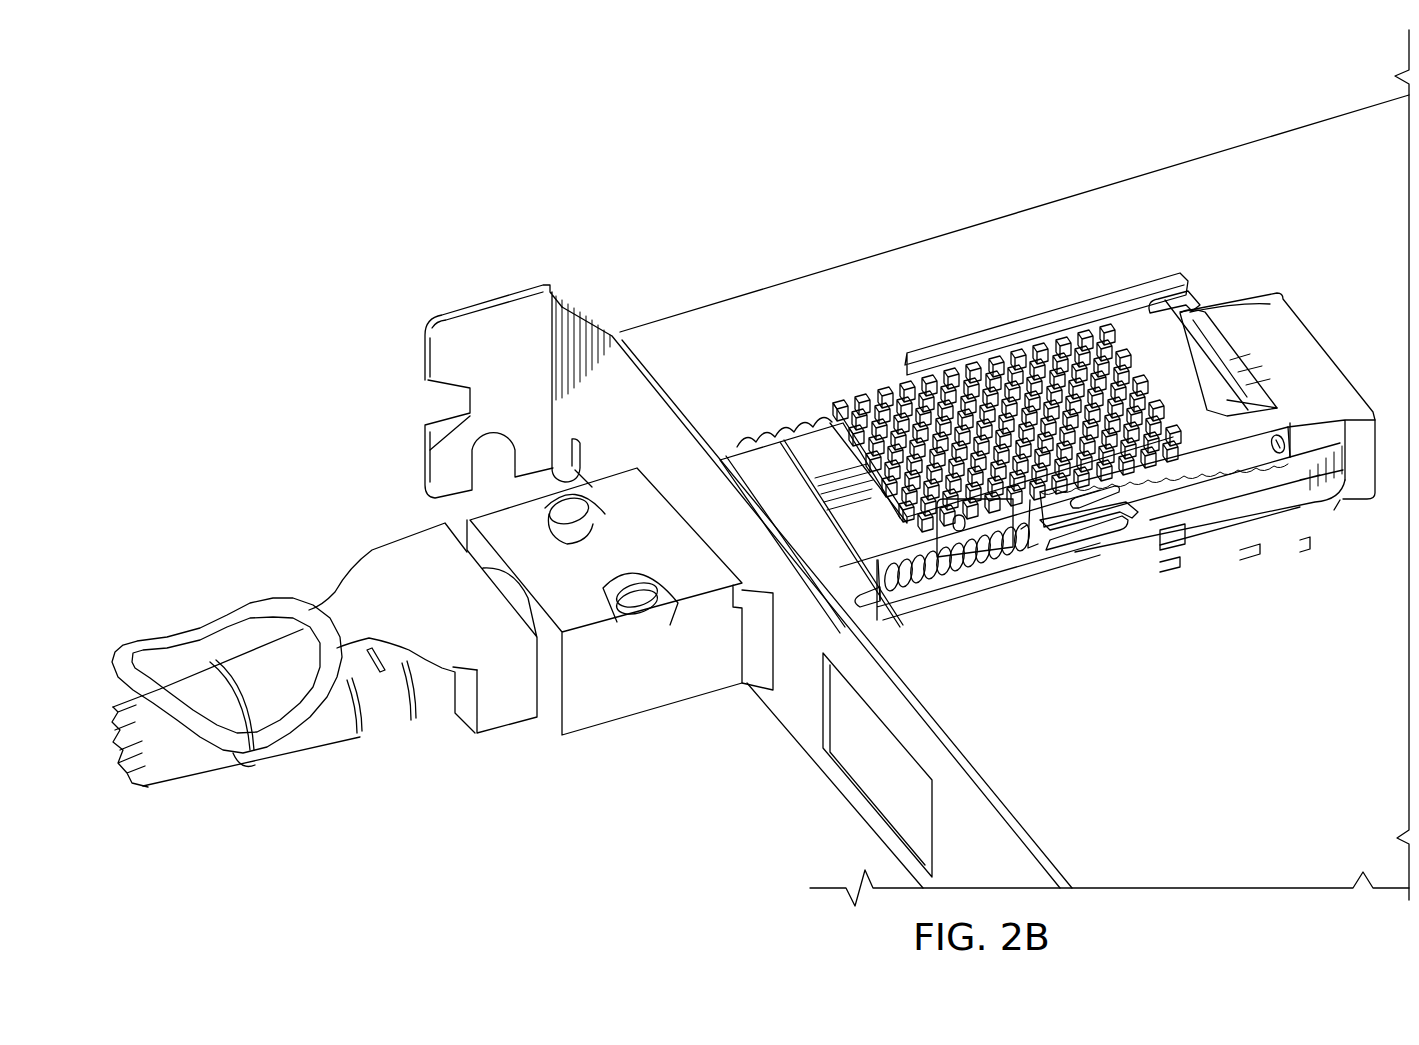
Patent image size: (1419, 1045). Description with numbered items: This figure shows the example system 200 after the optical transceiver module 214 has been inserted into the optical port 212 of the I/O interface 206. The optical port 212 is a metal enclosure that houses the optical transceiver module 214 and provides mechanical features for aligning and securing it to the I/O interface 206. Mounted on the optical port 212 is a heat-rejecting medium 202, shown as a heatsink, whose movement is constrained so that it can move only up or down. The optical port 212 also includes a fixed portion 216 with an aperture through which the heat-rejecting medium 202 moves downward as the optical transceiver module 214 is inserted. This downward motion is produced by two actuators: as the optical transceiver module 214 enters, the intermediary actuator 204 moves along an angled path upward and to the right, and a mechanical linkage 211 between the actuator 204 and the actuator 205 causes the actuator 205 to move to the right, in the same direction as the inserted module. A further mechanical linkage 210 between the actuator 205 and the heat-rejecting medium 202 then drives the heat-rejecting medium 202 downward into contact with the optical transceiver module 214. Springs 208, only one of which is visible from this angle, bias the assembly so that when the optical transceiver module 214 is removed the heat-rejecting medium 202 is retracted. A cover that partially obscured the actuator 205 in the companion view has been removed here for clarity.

The system 200 is at (300, 156).
The heat-rejecting medium 202 is at (1000, 345).
The actuator 204 is at (1165, 299).
The actuator 205 is at (1224, 490).
The I/O interface 206 is at (822, 271).
The springs 208 is at (930, 590).
The mechanical linkage 210 is at (1085, 500).
The mechanical linkage 211 is at (1280, 455).
The optical port 212 is at (1342, 382).
The optical transceiver module 214 is at (622, 722).
The fixed portion 216 is at (1280, 335).